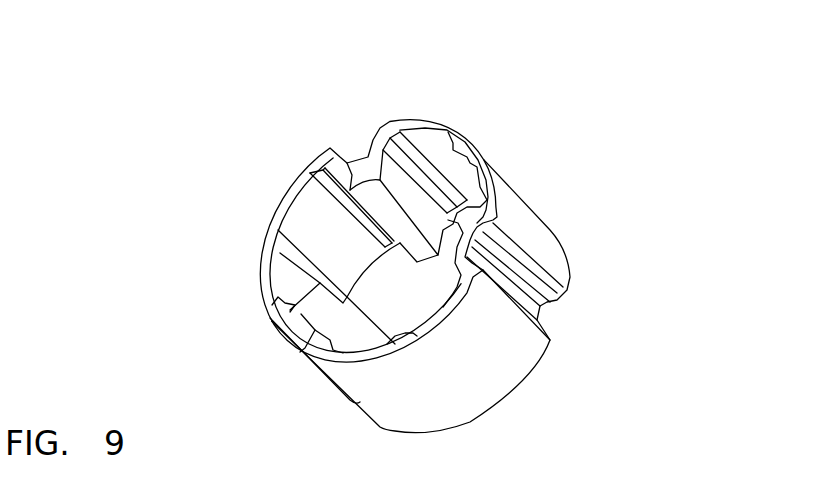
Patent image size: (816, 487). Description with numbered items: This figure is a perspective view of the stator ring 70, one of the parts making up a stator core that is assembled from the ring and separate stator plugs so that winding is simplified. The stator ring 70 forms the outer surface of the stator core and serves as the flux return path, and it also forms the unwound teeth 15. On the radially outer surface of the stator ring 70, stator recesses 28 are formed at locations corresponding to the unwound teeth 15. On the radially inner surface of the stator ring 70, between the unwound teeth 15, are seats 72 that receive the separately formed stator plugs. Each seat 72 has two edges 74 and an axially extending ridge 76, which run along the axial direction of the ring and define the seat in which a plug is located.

The stator ring 70 is at (518, 100).
The seats 72 is at (305, 201).
The edges 74 is at (410, 140).
The axially extending ridge 76 is at (288, 250).
The unwound teeth 15 is at (318, 307).
The stator recesses 28 is at (497, 262).